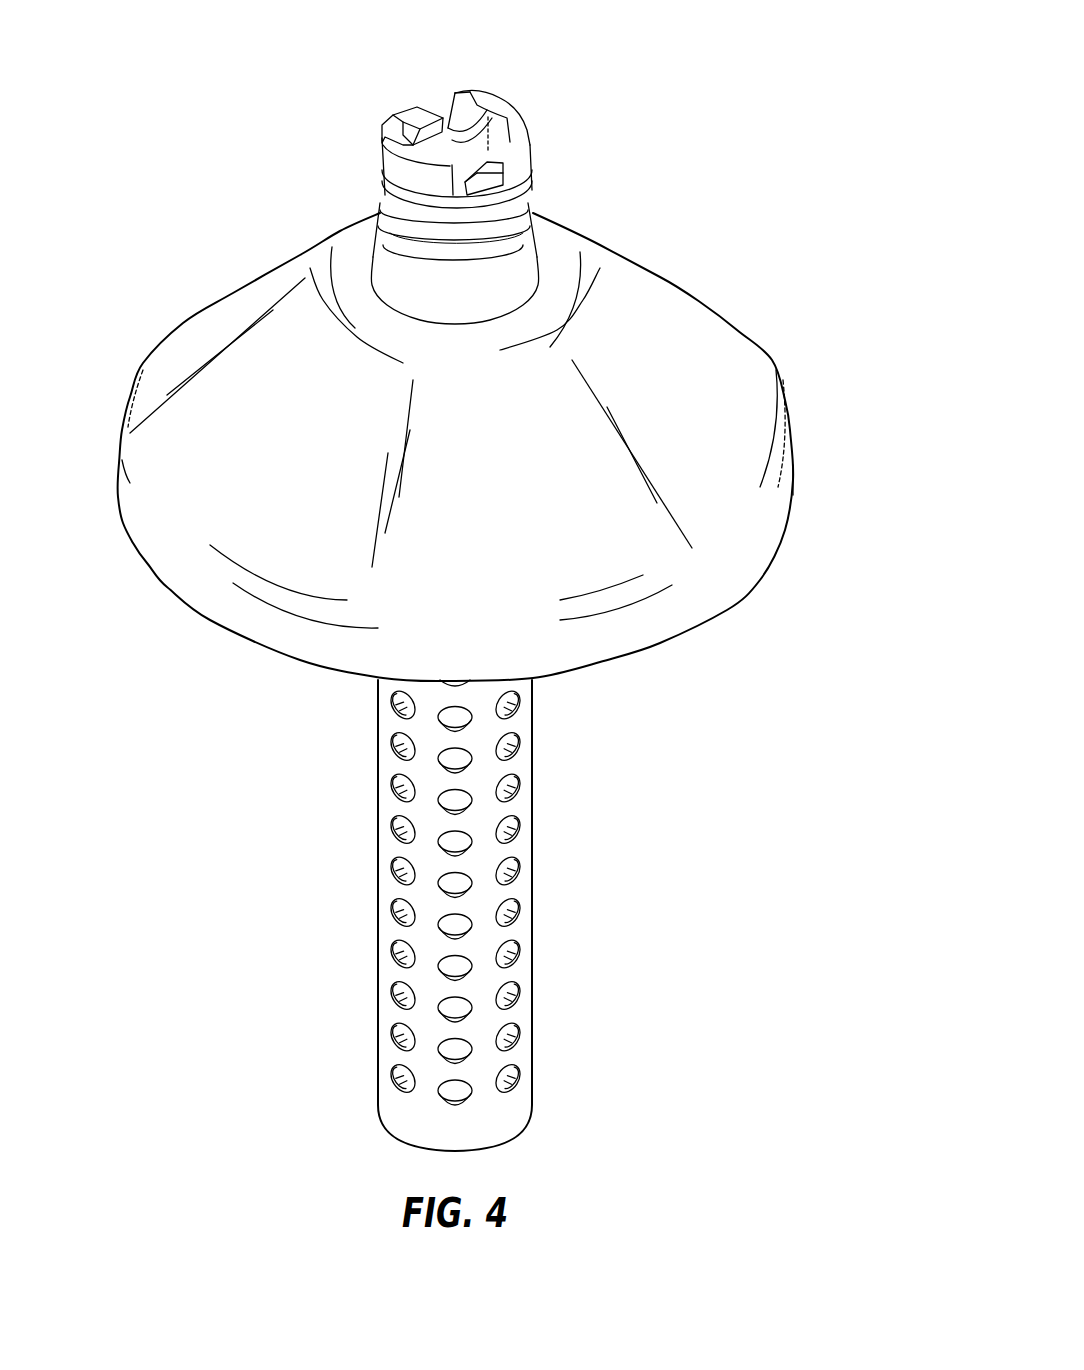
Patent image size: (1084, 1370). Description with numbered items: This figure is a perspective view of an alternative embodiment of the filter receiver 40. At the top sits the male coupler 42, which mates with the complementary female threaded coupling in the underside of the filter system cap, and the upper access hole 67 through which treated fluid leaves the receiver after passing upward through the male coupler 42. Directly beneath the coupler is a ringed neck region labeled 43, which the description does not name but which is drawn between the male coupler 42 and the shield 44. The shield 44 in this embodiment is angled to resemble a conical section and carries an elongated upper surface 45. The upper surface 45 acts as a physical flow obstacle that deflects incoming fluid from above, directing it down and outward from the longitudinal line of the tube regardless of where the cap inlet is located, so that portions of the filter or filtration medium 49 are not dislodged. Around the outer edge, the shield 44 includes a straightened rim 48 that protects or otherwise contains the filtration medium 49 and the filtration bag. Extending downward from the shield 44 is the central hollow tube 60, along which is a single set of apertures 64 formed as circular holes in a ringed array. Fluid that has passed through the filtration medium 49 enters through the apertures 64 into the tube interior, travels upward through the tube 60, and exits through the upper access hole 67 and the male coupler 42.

The filter receiver 40 is at (232, 84).
The male coupler 42 is at (533, 162).
The neck 43 is at (527, 212).
The shield 44 is at (732, 325).
The upper surface 45 is at (537, 477).
The straightened rim 48 is at (795, 472).
The filtration medium 49 is at (338, 270).
The central hollow tube 60 is at (548, 827).
The apertures 64 is at (512, 875).
The upper access hole 67 is at (440, 103).